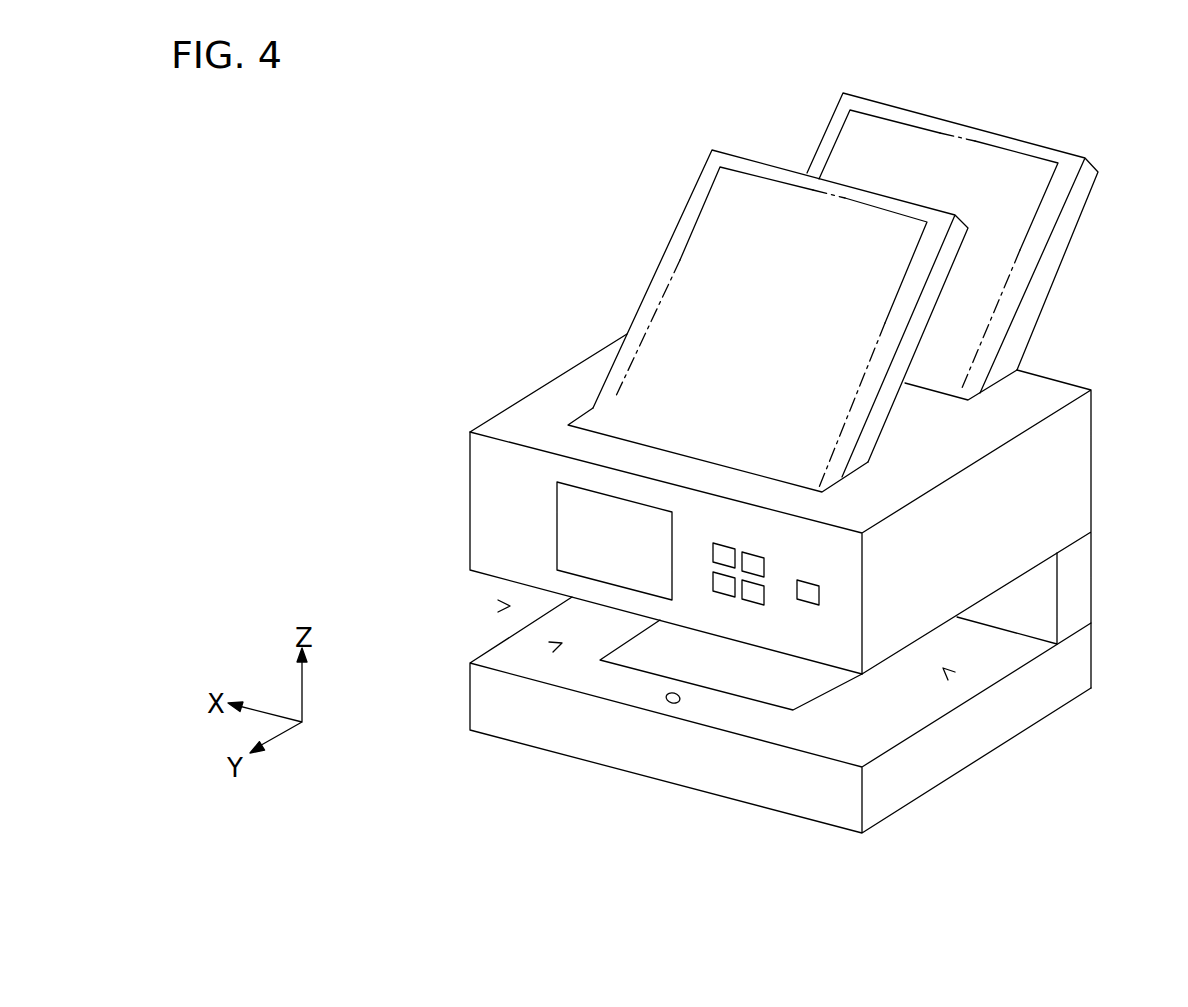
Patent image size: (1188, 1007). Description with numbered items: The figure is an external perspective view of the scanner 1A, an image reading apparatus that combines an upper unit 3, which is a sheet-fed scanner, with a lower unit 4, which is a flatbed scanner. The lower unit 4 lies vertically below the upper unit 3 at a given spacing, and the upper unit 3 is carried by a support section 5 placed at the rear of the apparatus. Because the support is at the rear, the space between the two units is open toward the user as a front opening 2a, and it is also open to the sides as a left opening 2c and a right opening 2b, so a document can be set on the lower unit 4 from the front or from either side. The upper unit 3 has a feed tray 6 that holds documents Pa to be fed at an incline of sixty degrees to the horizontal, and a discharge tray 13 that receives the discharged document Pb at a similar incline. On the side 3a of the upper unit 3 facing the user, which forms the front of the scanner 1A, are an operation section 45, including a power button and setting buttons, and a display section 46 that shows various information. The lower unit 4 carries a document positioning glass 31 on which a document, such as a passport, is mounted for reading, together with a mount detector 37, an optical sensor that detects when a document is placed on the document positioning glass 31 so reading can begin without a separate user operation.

The scanner 1A is at (507, 254).
The upper unit 3 is at (1052, 483).
The side of the upper unit 3a is at (481, 481).
The lower unit 4 is at (1068, 668).
The support section 5 is at (1075, 585).
The feed tray 6 is at (734, 152).
The discharge tray 13 is at (879, 98).
The documents to be fed Pa is at (710, 190).
The discharged document Pb is at (846, 118).
The front opening 2a is at (562, 643).
The right opening 2b is at (943, 668).
The left opening 2c is at (510, 606).
The document positioning glass 31 is at (757, 680).
The mount detector 37 is at (662, 697).
The operation section 45 is at (718, 617).
The display section 46 is at (578, 512).